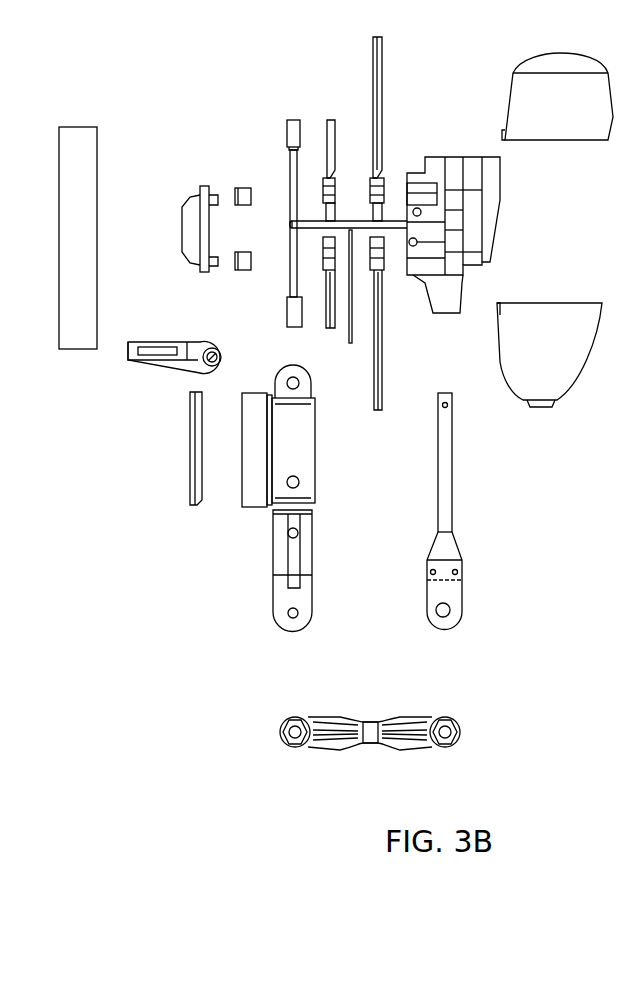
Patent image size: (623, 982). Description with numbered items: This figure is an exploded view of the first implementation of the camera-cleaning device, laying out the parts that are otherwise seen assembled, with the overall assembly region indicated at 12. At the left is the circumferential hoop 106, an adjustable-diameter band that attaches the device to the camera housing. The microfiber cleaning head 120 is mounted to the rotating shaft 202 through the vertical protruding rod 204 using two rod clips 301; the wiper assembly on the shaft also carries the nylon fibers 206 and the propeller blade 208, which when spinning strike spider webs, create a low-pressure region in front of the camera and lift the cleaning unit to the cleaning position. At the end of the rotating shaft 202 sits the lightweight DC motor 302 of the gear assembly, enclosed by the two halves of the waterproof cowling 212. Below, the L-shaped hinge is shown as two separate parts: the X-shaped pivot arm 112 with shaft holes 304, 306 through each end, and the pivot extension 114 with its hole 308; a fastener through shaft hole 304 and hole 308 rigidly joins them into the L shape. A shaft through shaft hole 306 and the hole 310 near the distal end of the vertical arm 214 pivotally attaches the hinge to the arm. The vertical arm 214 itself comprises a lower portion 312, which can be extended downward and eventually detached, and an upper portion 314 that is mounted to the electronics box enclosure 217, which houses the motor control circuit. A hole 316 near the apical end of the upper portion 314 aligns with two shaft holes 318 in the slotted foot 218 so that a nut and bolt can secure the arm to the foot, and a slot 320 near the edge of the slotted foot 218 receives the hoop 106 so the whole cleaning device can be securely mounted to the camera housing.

The actuator assembly 12 is at (11, 420).
The circumferential hoop 106 is at (69, 128).
The pivot arm 112 is at (368, 737).
The pivot extension 114 is at (491, 520).
The cleaning head 120 is at (197, 198).
The rotating shaft 202 is at (331, 293).
The protruding rod 204 is at (288, 120).
The nylon fibers 206 is at (333, 122).
The propeller blade 208 is at (381, 100).
The cowling 212 is at (555, 141).
The vertical arm 214 is at (272, 558).
The electronics box enclosure 217 is at (255, 482).
The slotted foot 218 is at (139, 329).
The rod clips 301 is at (237, 255).
The DC motor 302 is at (483, 219).
The shaft hole 304 is at (447, 729).
The shaft hole 306 is at (293, 729).
The hole 308 is at (448, 612).
The hole 310 is at (290, 616).
The lower portion 312 is at (280, 582).
The upper portion 314 is at (308, 412).
The hole 316 is at (292, 378).
The shaft holes 318 is at (205, 361).
The slot 320 is at (175, 348).